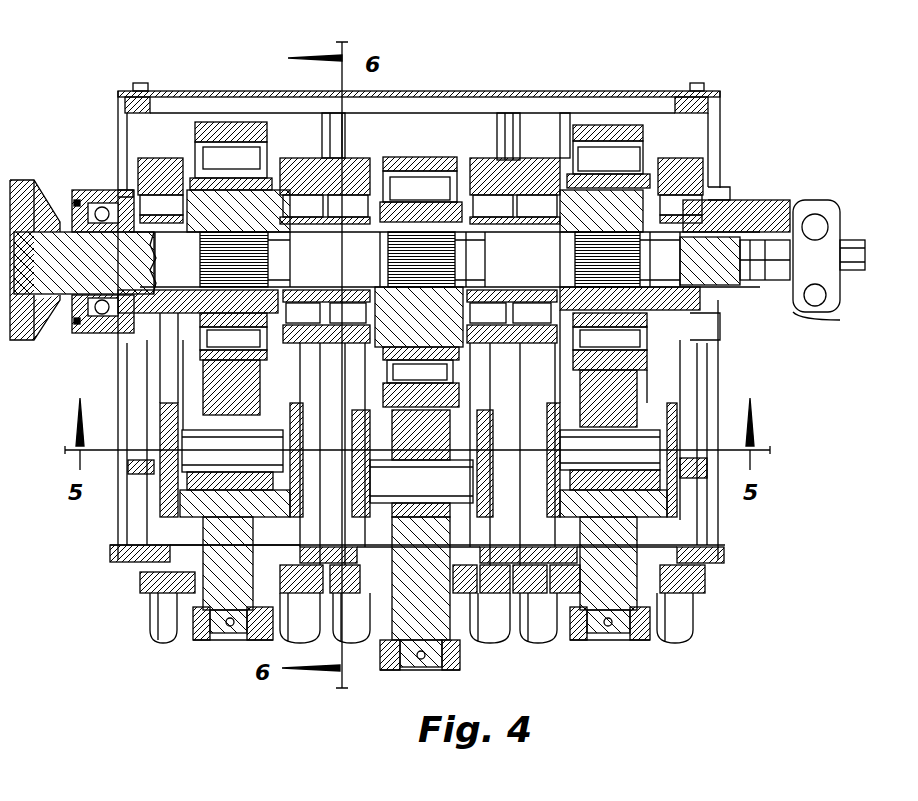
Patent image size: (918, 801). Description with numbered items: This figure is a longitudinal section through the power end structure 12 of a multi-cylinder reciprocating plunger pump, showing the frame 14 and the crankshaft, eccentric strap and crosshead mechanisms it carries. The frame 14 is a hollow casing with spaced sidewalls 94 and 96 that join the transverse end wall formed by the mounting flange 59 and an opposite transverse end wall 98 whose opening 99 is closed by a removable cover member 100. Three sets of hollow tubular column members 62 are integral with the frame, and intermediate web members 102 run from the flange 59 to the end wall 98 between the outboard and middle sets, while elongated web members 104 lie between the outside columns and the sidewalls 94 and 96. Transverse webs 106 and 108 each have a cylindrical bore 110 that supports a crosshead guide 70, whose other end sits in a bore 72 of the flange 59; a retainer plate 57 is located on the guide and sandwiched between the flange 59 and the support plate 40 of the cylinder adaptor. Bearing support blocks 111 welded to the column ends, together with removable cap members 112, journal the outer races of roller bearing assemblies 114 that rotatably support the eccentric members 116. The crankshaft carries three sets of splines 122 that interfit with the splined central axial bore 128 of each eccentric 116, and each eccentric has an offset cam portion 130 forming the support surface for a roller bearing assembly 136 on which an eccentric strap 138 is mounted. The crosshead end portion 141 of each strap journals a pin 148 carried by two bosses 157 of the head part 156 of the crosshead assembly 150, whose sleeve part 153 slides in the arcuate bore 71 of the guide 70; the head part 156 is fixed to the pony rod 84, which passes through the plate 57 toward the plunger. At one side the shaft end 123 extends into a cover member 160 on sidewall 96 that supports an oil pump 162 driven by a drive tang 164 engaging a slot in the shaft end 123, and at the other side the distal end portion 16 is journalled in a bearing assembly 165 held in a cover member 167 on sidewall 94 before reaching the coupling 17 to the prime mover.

The power end structure 12 is at (116, 98).
The frame 14 is at (124, 150).
The distal end portion 16 is at (82, 298).
The coupling 17 is at (48, 322).
The support plate 40 is at (150, 600).
The retainer plate 57 is at (150, 590).
The transverse mounting flange 59 is at (116, 560).
The tubular column members 62 is at (156, 376).
The crosshead guide 70 is at (128, 545).
The bore 71 is at (180, 535).
The bores 72 is at (160, 578).
The pony rod 84 is at (242, 640).
The sidewall 94 is at (122, 128).
The sidewall 96 is at (718, 378).
The transverse end wall 98 is at (720, 95).
The opening 99 is at (678, 100).
The cover member 100 is at (565, 115).
The web members 102 is at (328, 125).
The web members 104 is at (130, 398).
The transverse web 106 is at (480, 460).
The transverse web 108 is at (127, 474).
The cylindrical bore 110 is at (165, 470).
The bearing support blocks 111 is at (318, 290).
The cap members 112 is at (148, 164).
The roller bearing assemblies 114 is at (168, 195).
The eccentric members 116 is at (280, 265).
The splines 122 is at (252, 240).
The shaft end 123 is at (745, 245).
The central axial bore 128 is at (575, 246).
The cam portion 130 is at (220, 185).
The roller bearing assembly 136 is at (640, 25).
The eccentric strap 138 is at (235, 378).
The crosshead end portion 141 is at (192, 395).
The pin 148 is at (448, 470).
The crosshead assembly 150 is at (160, 523).
The sleeve part 153 is at (555, 600).
The head part 156 is at (477, 627).
The bosses 157 is at (460, 510).
The cover member 160 is at (692, 338).
The oil pump 162 is at (840, 320).
The drive tang 164 is at (795, 225).
The bearing assembly 165 is at (90, 205).
The cover member 167 is at (72, 300).